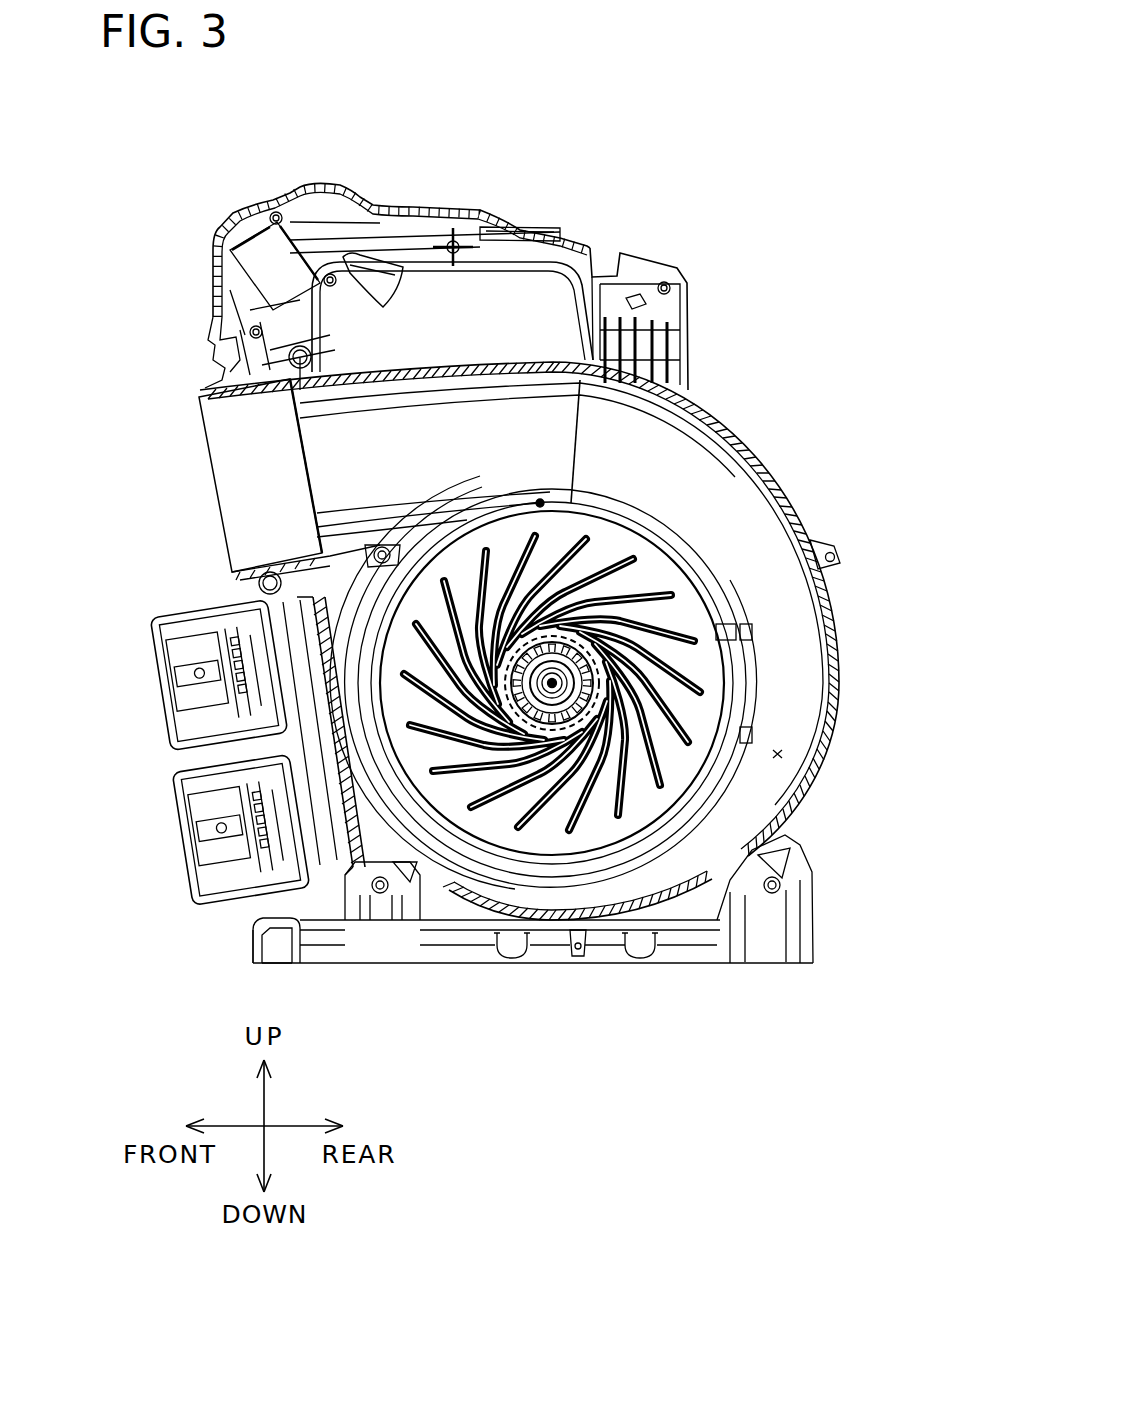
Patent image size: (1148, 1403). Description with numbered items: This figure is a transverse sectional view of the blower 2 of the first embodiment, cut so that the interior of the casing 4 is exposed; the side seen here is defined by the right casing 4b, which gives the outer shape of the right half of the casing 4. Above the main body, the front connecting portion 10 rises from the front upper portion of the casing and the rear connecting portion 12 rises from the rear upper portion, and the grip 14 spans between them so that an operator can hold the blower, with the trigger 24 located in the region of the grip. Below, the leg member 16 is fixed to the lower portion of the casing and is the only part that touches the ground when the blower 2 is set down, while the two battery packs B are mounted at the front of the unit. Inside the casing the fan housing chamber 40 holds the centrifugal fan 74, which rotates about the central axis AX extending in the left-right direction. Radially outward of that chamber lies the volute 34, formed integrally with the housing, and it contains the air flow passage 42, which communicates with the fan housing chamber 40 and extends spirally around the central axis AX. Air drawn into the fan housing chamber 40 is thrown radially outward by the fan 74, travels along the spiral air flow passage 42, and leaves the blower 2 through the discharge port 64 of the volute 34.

The blower 2 is at (795, 210).
The casing 4 is at (683, 902).
The right casing 4b is at (785, 822).
The front connecting portion 10 is at (237, 243).
The rear connecting portion 12 is at (668, 320).
The grip 14 is at (521, 232).
The leg member 16 is at (258, 932).
The trigger 24 is at (380, 290).
The volute 34 is at (838, 618).
The fan housing chamber 40 is at (552, 796).
The air flow passage 42 is at (778, 754).
The discharge port 64 is at (222, 392).
The fan 74 is at (490, 803).
The central axis AX is at (556, 683).
The battery packs B is at (173, 807).